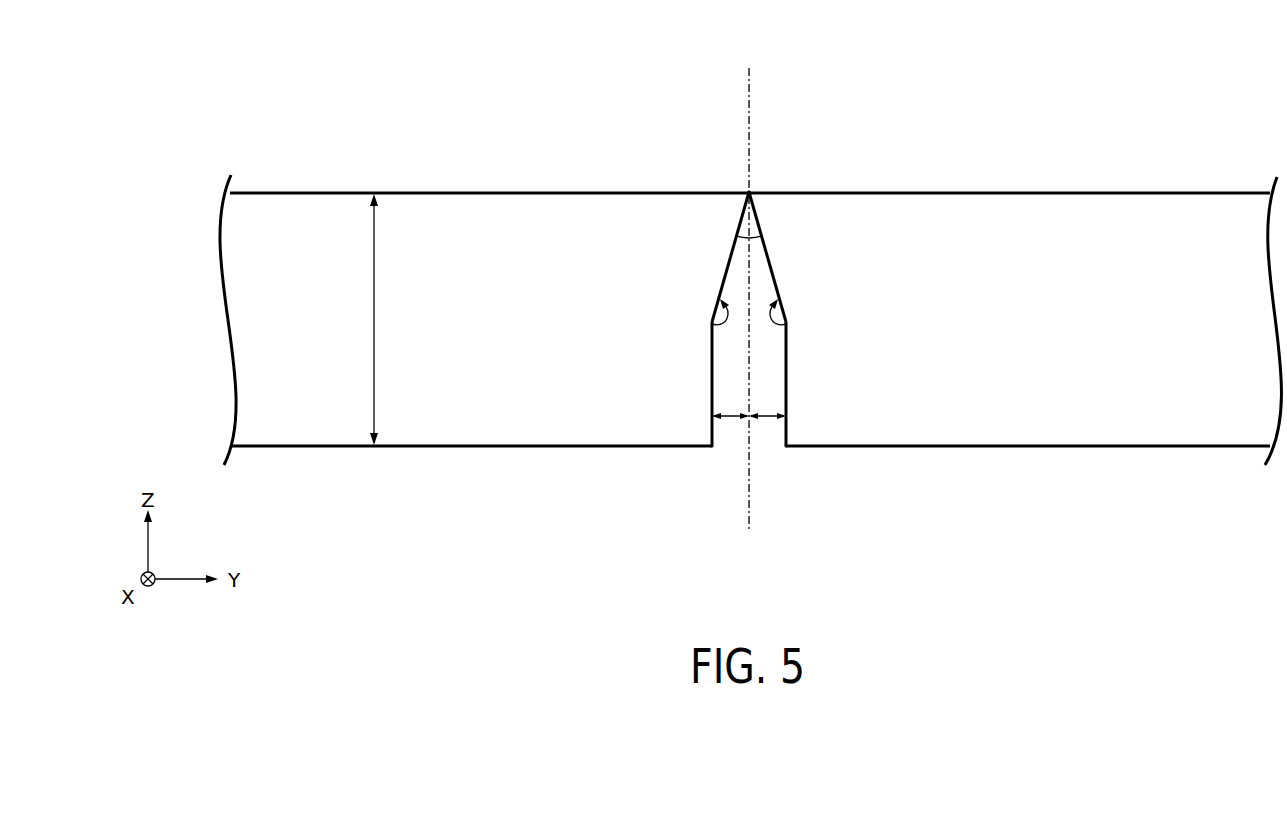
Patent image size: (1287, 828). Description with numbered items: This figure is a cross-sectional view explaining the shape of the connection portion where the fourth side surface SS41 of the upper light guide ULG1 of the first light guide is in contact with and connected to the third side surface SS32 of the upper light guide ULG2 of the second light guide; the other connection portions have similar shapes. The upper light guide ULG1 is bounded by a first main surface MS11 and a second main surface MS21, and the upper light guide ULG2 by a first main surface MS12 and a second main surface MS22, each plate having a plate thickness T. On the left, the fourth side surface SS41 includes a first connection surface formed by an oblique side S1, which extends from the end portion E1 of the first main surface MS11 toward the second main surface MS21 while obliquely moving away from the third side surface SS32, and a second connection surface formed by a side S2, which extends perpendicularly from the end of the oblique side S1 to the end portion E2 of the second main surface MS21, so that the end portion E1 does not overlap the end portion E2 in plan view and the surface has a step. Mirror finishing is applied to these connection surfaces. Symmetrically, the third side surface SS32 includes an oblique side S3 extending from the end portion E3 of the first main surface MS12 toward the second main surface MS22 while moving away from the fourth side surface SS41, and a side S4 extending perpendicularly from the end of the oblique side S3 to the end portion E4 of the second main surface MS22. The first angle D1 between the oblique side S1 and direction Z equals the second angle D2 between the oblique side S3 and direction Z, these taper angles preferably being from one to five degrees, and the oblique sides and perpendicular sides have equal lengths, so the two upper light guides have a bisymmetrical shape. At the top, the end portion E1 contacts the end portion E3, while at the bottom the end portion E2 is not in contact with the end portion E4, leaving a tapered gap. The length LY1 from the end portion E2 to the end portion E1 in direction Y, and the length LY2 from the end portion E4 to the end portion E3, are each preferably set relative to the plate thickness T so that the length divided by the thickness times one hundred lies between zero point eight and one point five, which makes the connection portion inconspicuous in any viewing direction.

The upper light guide of the first light guide ULG1 is at (488, 135).
The upper light guide of the second light guide ULG2 is at (1060, 133).
The first main surface of upper light guide ULG1 MS11 is at (558, 188).
The first main surface of upper light guide ULG2 MS12 is at (1178, 188).
The second main surface of upper light guide ULG1 MS21 is at (506, 455).
The second main surface of upper light guide ULG2 MS22 is at (1033, 455).
The plate thickness T is at (364, 319).
The end portion of the first main surface MS11 E1 is at (748, 191).
The end portion of the second main surface MS21 E2 is at (711, 449).
The end portion of the first main surface MS12 E3 is at (750, 191).
The end portion of the second main surface MS22 E4 is at (786, 449).
The first angle D1 is at (744, 232).
The second angle D2 is at (754, 232).
The oblique side S1 is at (724, 262).
The side S2 is at (710, 380).
The oblique side S3 is at (774, 262).
The side S4 is at (788, 380).
The fourth side surface of upper light guide ULG1 SS41 is at (709, 323).
The third side surface of upper light guide ULG2 SS32 is at (789, 323).
The length from end portion E2 to end portion E1 in direction Y LY1 is at (730, 422).
The length from end portion E4 to end portion E3 in direction Y LY2 is at (768, 422).